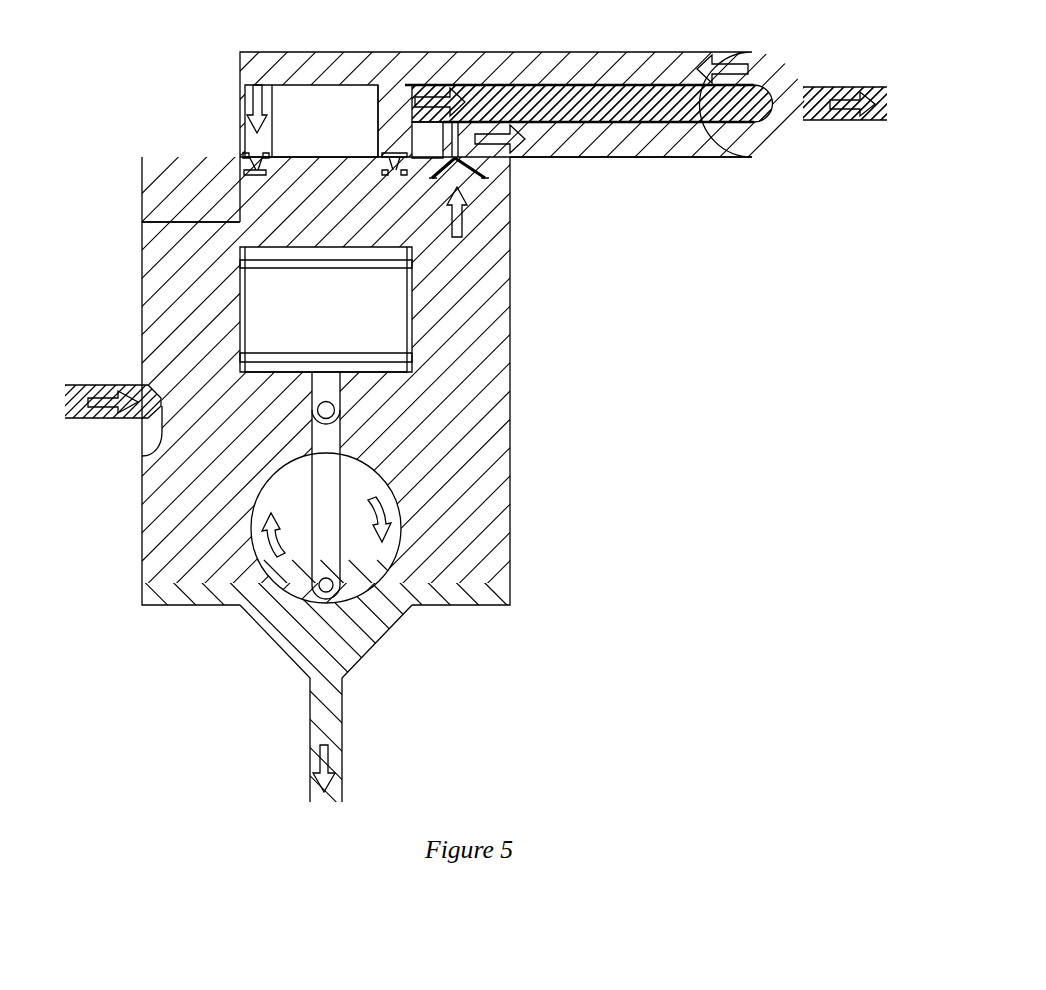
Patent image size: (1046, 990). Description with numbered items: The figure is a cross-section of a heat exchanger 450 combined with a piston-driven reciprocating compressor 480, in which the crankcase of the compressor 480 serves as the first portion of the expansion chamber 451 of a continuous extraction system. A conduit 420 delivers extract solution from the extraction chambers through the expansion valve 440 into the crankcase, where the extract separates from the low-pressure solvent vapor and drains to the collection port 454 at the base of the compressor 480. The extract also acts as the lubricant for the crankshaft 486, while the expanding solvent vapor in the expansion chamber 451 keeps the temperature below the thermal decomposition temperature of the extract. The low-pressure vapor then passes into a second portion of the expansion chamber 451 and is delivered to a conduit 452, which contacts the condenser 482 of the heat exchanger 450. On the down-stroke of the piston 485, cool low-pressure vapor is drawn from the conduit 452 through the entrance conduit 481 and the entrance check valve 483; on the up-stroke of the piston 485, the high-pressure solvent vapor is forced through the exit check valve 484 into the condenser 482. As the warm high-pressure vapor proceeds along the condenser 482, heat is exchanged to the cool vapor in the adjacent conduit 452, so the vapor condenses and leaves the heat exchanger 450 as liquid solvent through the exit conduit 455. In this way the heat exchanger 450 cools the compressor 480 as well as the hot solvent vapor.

The conduit 420 is at (110, 413).
The expansion valve 440 is at (142, 456).
The heat exchanger 450 is at (803, 57).
The expansion chamber 451 is at (500, 242).
The conduit 452 is at (627, 147).
The collection port 454 is at (297, 641).
The exit conduit 455 is at (833, 87).
The compressor 480 is at (138, 222).
The entrance conduit 481 is at (256, 63).
The condenser 482 is at (388, 138).
The entrance check valve 483 is at (263, 153).
The exit check valve 484 is at (388, 167).
The piston 485 is at (385, 317).
The crankshaft 486 is at (352, 532).